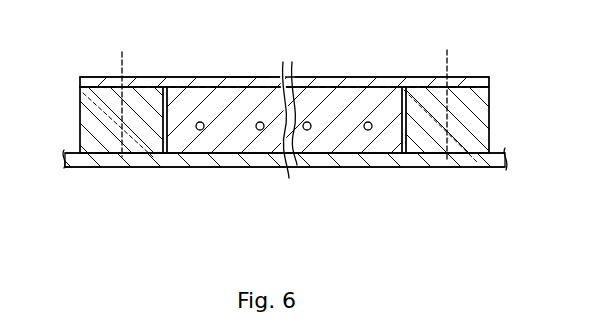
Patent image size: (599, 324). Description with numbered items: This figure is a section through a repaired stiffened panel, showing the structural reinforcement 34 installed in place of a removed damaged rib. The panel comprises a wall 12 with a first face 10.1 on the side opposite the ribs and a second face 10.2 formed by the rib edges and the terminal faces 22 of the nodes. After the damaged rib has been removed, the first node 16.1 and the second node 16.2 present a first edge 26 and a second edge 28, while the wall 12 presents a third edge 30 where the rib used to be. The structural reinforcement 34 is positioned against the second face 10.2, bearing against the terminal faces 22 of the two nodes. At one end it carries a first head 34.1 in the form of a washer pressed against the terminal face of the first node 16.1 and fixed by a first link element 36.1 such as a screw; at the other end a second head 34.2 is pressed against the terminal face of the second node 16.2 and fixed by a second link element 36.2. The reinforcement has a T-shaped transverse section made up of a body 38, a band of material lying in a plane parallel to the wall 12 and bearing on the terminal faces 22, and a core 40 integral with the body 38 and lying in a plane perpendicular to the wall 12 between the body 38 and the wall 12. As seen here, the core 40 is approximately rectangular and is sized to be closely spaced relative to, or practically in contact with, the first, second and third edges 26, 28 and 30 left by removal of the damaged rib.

The first face 10.1 is at (486, 167).
The second face 10.2 is at (482, 77).
The wall 12 is at (343, 183).
The first node 16.1 is at (461, 145).
The second node 16.2 is at (84, 122).
The terminal faces 22 is at (118, 78).
The first edge 26 is at (396, 137).
The second edge 28 is at (176, 123).
The third edge 30 is at (297, 165).
The structural reinforcement 34 is at (305, 62).
The first head 34.1 is at (431, 77).
The second head 34.2 is at (158, 77).
The first link element 36.1 is at (441, 75).
The second link element 36.2 is at (128, 64).
The body 38 is at (249, 77).
The core 40 is at (232, 122).